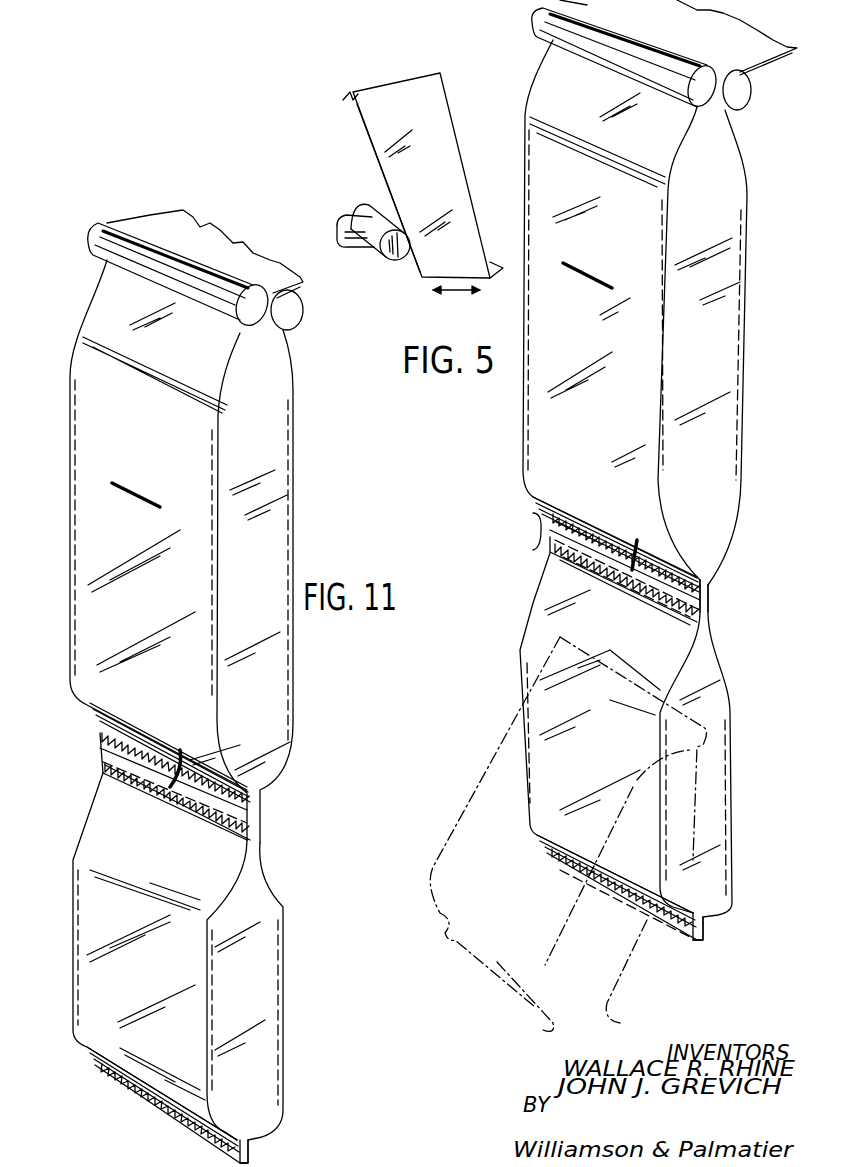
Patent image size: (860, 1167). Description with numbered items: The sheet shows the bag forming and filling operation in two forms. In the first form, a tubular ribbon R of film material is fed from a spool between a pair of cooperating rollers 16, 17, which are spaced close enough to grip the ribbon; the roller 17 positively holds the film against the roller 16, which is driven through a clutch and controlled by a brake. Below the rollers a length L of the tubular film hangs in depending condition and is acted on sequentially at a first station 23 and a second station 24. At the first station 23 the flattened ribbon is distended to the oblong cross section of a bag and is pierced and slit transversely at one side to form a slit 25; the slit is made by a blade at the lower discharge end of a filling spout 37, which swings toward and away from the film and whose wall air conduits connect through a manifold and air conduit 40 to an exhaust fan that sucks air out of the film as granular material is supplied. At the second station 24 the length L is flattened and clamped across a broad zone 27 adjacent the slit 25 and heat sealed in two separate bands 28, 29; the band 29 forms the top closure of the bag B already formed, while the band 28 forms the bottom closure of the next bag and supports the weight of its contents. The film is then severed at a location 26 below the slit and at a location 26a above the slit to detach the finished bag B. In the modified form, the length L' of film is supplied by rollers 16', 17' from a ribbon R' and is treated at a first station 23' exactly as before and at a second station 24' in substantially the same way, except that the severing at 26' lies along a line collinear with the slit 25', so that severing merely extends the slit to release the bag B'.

In FIG. 5, the length of tubular film material L is at (588, 535).
In FIG. 11, the length of tubular film material L' is at (199, 711).
In FIG. 5, the roller 16 is at (750, 102).
In FIG. 5, the roller 17 is at (635, 55).
In FIG. 5, the tubular ribbon of film material R is at (742, 48).
In FIG. 5, the first station 23 is at (750, 286).
In FIG. 5, the second station 24 is at (665, 559).
In FIG. 5, the slit 25 is at (598, 266).
In FIG. 5, the severing location 26 is at (625, 582).
In FIG. 5, the severing location 26a is at (577, 543).
In FIG. 5, the zone 27 is at (533, 523).
In FIG. 5, the band of heat sealing 28 is at (702, 583).
In FIG. 5, the band of heat sealing 29 is at (706, 612).
In FIG. 5, the filling spout 37 is at (467, 234).
In FIG. 5, the manifold and air conduit 40 is at (390, 260).
In FIG. 5, the bag B is at (681, 981).
In FIG. 11, the lower feed roller (modified) 16' is at (287, 310).
In FIG. 11, the upper feed roller (modified) 17' is at (181, 276).
In FIG. 11, the web of liner material (modified) R' is at (205, 254).
In FIG. 11, the first station 23' is at (306, 494).
In FIG. 11, the second station 24' is at (135, 771).
In FIG. 11, the slit 25' is at (156, 617).
In FIG. 11, the severing location 26' is at (177, 816).
In FIG. 11, the bag B' is at (281, 1092).